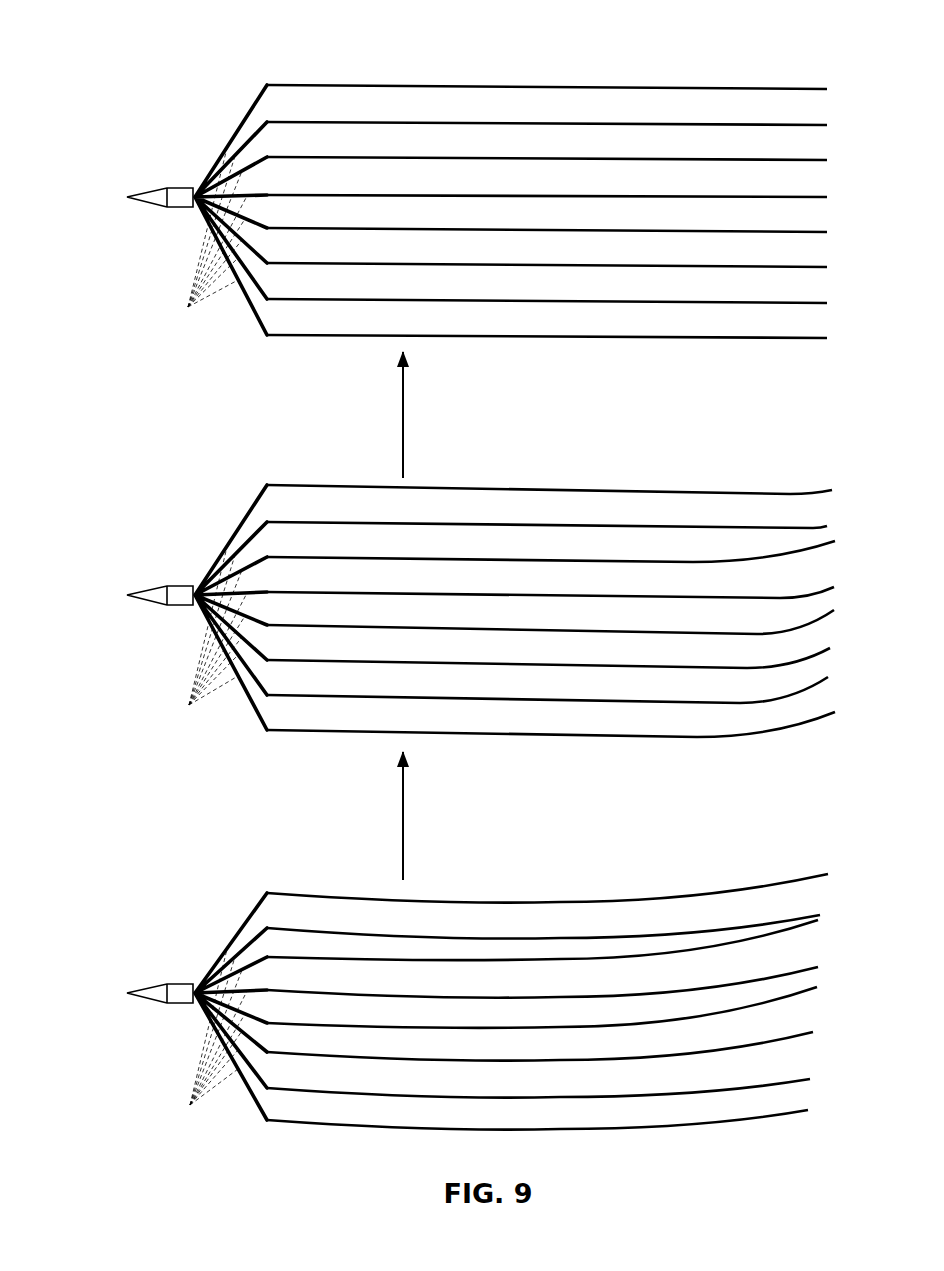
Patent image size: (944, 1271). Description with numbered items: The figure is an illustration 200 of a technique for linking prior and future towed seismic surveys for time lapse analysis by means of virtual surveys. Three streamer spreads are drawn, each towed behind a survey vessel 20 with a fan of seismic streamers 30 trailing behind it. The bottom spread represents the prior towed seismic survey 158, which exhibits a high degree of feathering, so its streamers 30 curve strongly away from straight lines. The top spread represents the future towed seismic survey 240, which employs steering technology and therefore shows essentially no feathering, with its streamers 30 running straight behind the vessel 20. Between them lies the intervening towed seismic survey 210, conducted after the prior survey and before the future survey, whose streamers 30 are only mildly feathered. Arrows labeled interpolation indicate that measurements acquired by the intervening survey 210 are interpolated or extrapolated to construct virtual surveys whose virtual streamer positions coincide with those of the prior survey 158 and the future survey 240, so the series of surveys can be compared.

The illustration 200 is at (138, 410).
The future towed seismic survey 240 is at (197, 107).
The intervening towed seismic survey 210 is at (197, 505).
The original curved line set 158 is at (197, 905).
The survey vessel 20 is at (182, 187).
The seismic streamers 30 is at (188, 307).